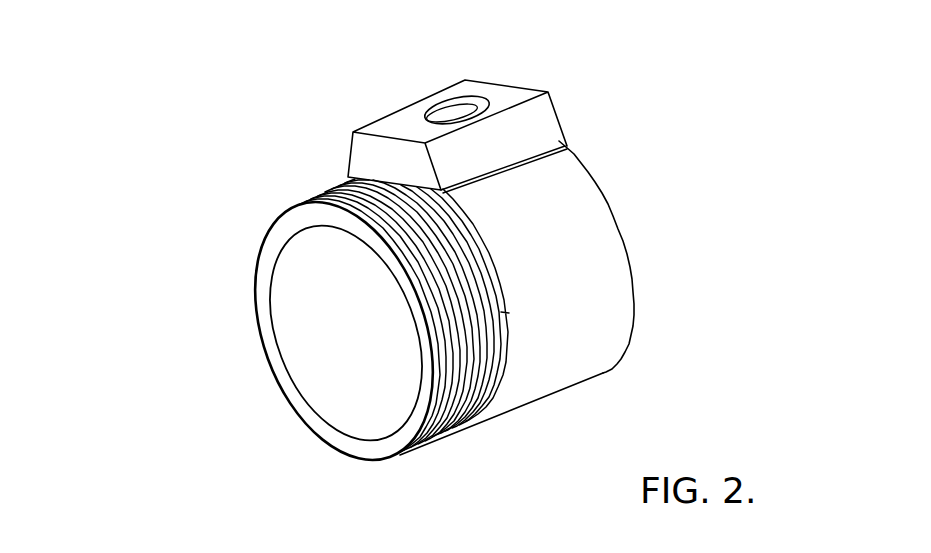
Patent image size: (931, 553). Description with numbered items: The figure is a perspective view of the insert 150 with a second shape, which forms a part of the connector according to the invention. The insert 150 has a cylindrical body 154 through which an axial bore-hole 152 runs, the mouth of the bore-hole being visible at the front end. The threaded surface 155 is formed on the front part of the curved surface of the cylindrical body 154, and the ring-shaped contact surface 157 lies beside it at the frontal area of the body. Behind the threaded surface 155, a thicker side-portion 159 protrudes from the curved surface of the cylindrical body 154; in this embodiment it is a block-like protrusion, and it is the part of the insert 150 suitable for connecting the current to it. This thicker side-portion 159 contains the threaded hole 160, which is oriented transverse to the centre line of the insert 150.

The insert 150 is at (282, 135).
The axial bore-hole 152 is at (307, 305).
The cylindrical body 154 is at (577, 315).
The threaded surface 155 is at (440, 278).
The ring-shaped contact surface 157 is at (343, 438).
The thicker side-portion 159 is at (550, 95).
The threaded hole 160 is at (455, 108).